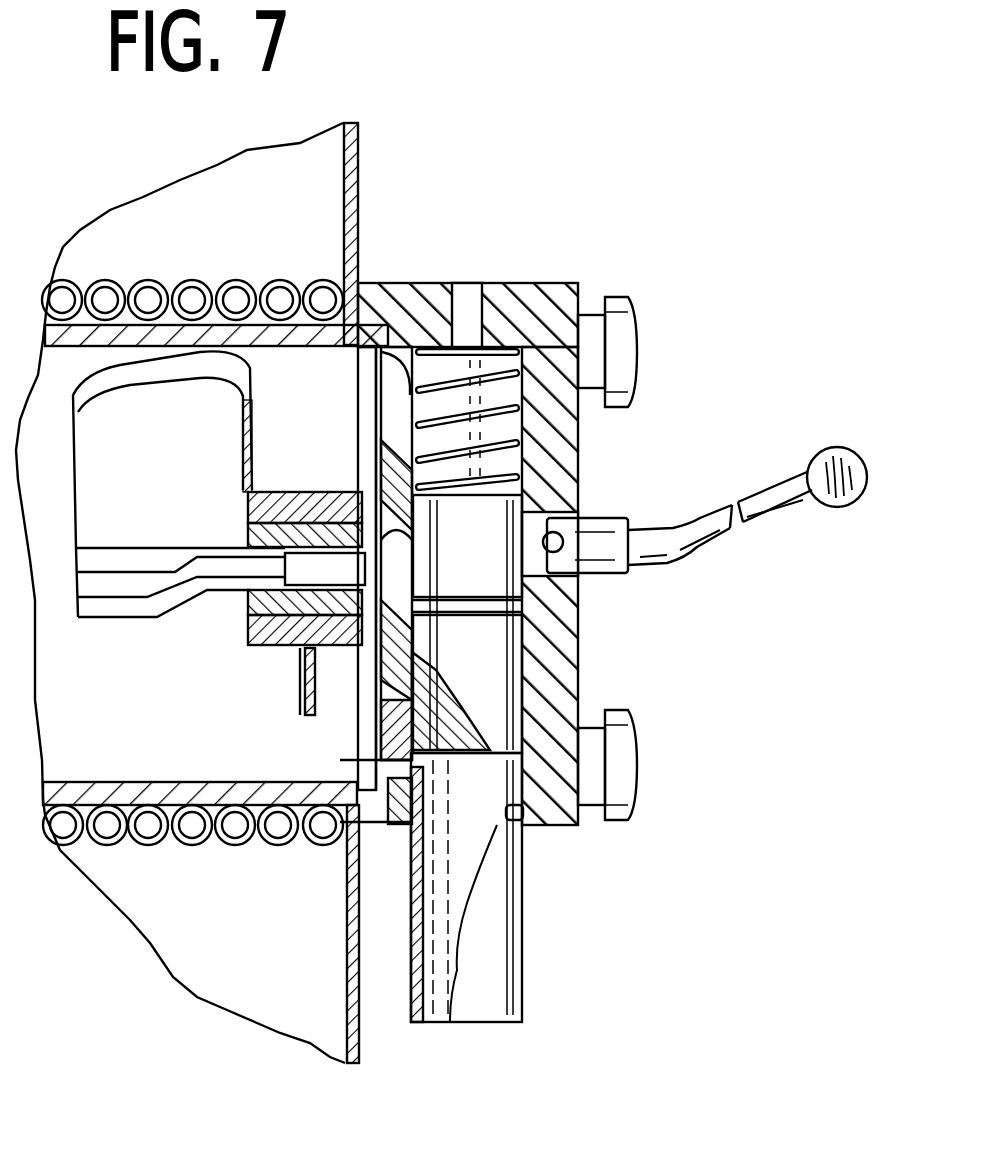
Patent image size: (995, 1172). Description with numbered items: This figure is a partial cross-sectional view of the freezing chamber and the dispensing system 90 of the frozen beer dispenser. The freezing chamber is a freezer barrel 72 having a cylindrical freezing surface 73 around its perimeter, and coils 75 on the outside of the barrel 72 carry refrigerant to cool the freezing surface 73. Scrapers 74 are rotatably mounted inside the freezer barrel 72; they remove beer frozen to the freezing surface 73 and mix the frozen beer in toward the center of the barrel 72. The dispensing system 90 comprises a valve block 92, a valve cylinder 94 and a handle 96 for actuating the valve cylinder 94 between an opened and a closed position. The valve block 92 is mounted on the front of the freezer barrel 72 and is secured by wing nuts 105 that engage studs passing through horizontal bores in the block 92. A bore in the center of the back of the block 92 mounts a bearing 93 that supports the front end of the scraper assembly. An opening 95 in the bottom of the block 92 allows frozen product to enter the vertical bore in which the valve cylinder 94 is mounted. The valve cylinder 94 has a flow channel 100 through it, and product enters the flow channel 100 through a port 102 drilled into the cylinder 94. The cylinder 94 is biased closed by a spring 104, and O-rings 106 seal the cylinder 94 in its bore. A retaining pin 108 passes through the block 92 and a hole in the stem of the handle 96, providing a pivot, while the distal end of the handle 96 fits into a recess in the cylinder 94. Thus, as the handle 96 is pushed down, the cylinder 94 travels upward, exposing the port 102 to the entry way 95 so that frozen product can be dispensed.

The freezer barrel 72 is at (275, 848).
The cylindrical freezing surface 73 is at (208, 782).
The scrapers 74 is at (195, 388).
The coils 75 is at (165, 282).
The dispensing system 90 is at (458, 601).
The valve block 92 is at (422, 315).
The bearing 93 is at (383, 472).
The valve cylinder 94 is at (504, 929).
The opening 95 is at (380, 745).
The handle 96 is at (767, 500).
The flow channel 100 is at (440, 1000).
The port 102 is at (378, 775).
The spring 104 is at (525, 447).
The wing nuts 105 is at (638, 350).
The O-rings 106 is at (570, 685).
The retaining pin 108 is at (562, 542).